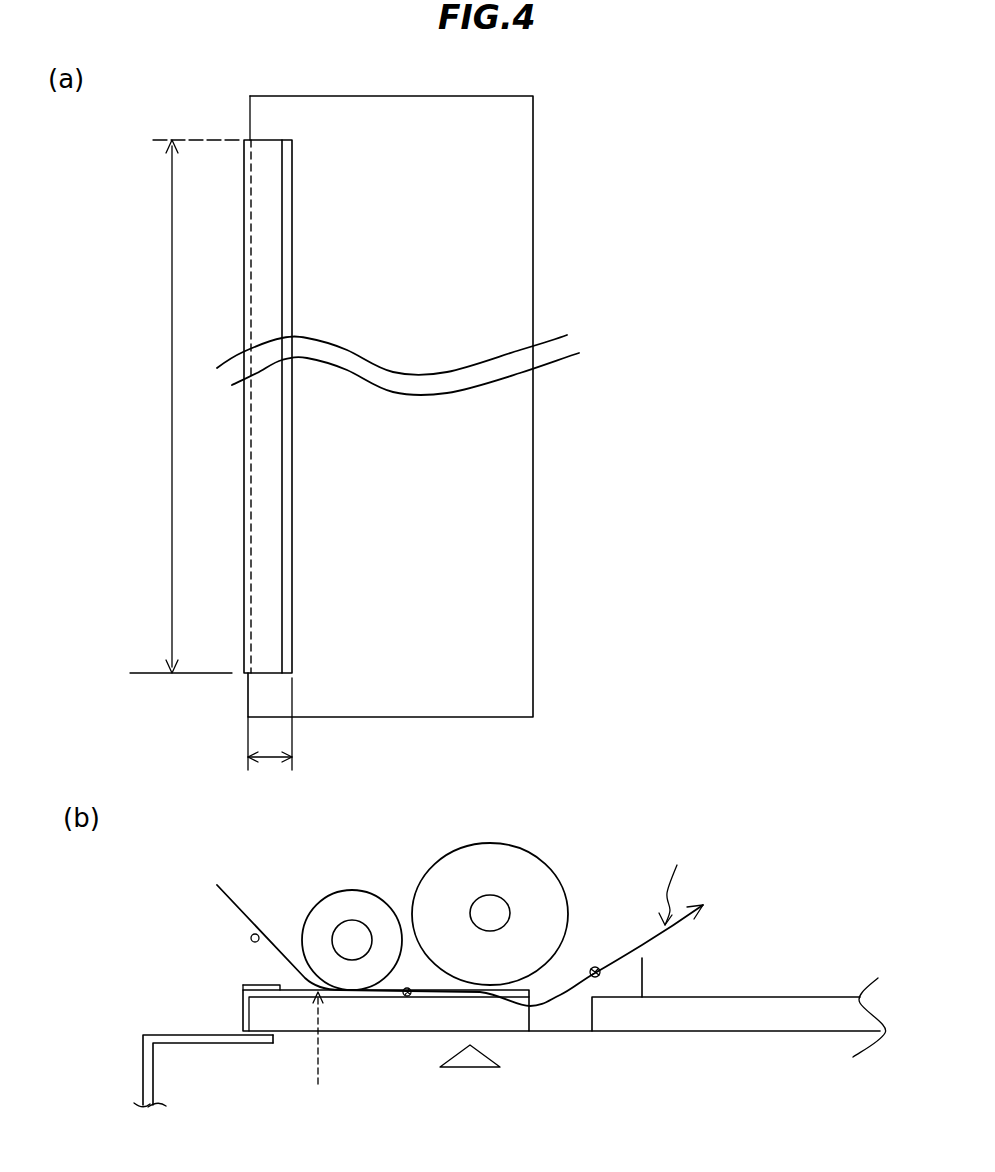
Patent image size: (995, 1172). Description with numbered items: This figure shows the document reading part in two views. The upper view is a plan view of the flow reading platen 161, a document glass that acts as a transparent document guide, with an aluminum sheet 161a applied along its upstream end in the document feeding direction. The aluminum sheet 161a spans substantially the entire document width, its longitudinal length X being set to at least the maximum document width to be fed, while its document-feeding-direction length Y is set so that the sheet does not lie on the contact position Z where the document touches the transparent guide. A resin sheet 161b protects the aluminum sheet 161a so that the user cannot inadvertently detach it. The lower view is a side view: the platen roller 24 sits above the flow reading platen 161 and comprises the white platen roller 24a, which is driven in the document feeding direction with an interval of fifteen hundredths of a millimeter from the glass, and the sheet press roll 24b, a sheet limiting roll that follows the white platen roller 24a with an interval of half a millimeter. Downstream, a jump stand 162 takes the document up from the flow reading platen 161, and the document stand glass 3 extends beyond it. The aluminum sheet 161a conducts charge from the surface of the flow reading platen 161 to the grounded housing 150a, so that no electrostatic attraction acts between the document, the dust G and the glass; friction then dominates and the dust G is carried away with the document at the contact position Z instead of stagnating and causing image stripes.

The flow reading platen 161 is at (517, 483).
The aluminum sheet 161a is at (287, 662).
The resin sheet 161b is at (262, 667).
The platen roller 24 is at (461, 880).
The white platen roller 24a is at (530, 876).
The sheet press roll 24b is at (347, 903).
The jump stand 162 is at (577, 1017).
The document stand glass 3 is at (803, 1020).
The grounded housing 150a is at (142, 1087).
The dust G is at (255, 935).
The longitudinal direction length X is at (186, 406).
The document feeding direction length Y is at (270, 736).
The contact position Z is at (318, 1054).